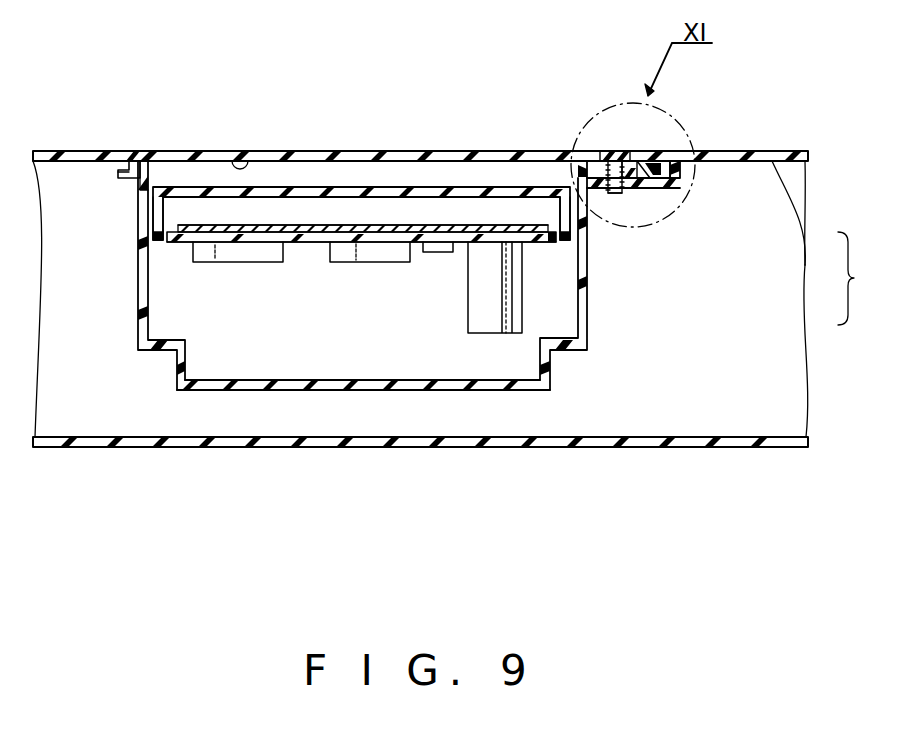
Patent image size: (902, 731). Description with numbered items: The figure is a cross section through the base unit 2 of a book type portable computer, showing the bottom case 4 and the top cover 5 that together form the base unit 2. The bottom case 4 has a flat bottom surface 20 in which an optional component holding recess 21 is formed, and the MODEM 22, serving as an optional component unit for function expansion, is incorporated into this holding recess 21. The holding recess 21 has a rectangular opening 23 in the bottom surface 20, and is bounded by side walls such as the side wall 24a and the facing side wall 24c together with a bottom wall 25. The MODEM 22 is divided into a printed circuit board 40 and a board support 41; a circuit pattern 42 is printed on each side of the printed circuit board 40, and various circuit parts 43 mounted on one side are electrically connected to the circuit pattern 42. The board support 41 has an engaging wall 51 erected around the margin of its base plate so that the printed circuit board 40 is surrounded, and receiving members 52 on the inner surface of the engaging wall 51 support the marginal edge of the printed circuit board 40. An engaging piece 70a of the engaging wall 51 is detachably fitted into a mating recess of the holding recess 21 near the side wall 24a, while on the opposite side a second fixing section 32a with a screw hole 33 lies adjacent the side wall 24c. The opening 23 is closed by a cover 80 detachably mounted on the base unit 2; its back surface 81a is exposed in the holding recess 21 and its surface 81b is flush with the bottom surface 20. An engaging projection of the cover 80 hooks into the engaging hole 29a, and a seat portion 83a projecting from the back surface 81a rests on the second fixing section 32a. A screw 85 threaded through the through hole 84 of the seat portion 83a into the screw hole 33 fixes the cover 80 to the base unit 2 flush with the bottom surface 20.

The base unit 2 is at (855, 278).
The bottom case 4 is at (800, 230).
The top cover 5 is at (748, 437).
The bottom surface 20 is at (750, 151).
The holding recess 21 is at (278, 363).
The MODEM 22 is at (466, 186).
The opening 23 is at (142, 158).
The side wall 24a is at (140, 280).
The side wall 24c is at (590, 294).
The bottom wall 25 is at (416, 388).
The engaging hole 29a is at (130, 151).
The second fixing section 32a is at (686, 188).
The screw hole 33 is at (632, 195).
The printed circuit board 40 is at (372, 244).
The board support 41 is at (352, 226).
The circuit pattern 42 is at (298, 224).
The circuit parts 43 is at (243, 264).
The engaging wall 51 is at (160, 242).
The receiving members 52 is at (175, 215).
The engaging piece 70a is at (117, 176).
The cover 80 is at (375, 150).
The back surface 81a is at (242, 160).
The surface 81b is at (428, 151).
The seat portion 83a is at (657, 150).
The through hole 84 is at (615, 152).
The screw 85 is at (610, 168).